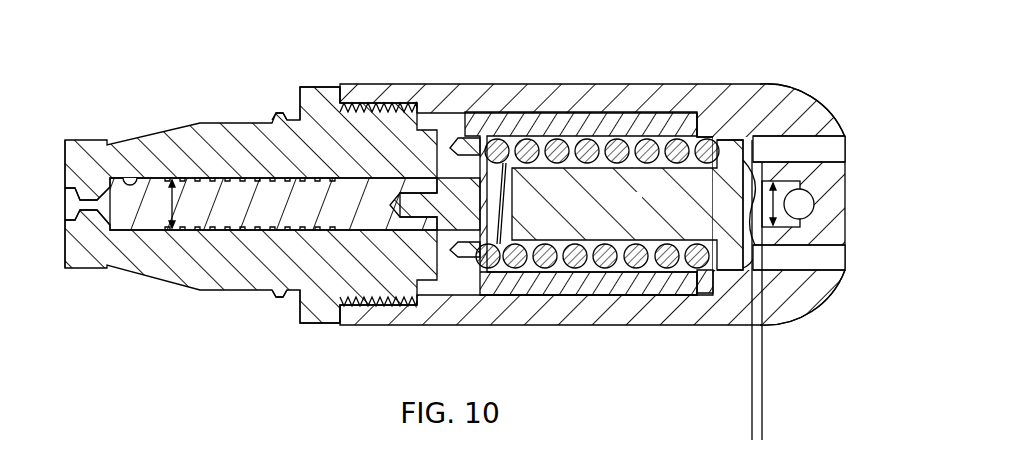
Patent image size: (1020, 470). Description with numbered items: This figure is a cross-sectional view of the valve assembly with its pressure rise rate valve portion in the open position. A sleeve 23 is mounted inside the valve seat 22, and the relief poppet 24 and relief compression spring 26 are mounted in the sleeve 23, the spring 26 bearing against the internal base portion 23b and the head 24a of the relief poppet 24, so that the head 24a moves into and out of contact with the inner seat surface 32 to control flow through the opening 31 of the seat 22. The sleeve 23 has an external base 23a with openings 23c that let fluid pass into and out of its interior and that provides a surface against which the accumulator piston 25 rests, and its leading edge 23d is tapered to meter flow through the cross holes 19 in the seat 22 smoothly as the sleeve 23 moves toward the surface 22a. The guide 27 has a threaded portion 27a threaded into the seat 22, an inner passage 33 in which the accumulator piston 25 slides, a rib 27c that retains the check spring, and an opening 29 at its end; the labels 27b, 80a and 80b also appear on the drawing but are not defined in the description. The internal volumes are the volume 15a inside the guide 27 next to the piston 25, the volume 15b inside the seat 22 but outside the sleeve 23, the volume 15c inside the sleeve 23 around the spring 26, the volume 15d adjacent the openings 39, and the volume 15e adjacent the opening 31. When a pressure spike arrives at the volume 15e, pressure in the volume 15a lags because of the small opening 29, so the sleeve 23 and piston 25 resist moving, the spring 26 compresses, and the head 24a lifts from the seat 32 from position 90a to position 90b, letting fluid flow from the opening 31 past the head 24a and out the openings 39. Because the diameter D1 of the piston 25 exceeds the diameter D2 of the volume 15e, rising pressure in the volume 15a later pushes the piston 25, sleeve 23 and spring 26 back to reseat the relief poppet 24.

The volume 15a is at (121, 213).
The volume 15b is at (427, 142).
The volume 15c is at (588, 272).
The volume 15d is at (775, 112).
The volume 15e is at (780, 250).
The cross holes 19 is at (648, 100).
The valve seat 22 is at (552, 325).
The surface 22a is at (726, 132).
The sleeve 23 is at (550, 113).
The external base 23a is at (423, 222).
The internal base portion 23b is at (505, 258).
The openings 23c is at (447, 150).
The leading edge 23d is at (700, 293).
The relief poppet 24 is at (641, 213).
The head 24a is at (740, 140).
The accumulator piston 25 is at (230, 210).
The relief compression spring 26 is at (590, 150).
The guide 27 is at (231, 140).
The threaded portion 27a is at (358, 305).
The nut groove 27b is at (290, 300).
The rib 27c is at (275, 113).
The opening 29 is at (66, 205).
The openings 31 is at (806, 208).
The inner seat surface 32 is at (746, 265).
The inner passage 33 is at (126, 178).
The openings 39 is at (800, 152).
The line 80a is at (162, 175).
The line 80b is at (178, 175).
The position 90a is at (762, 436).
The position 90b is at (752, 437).
The diameter D1 is at (173, 230).
The diameter D2 is at (773, 225).